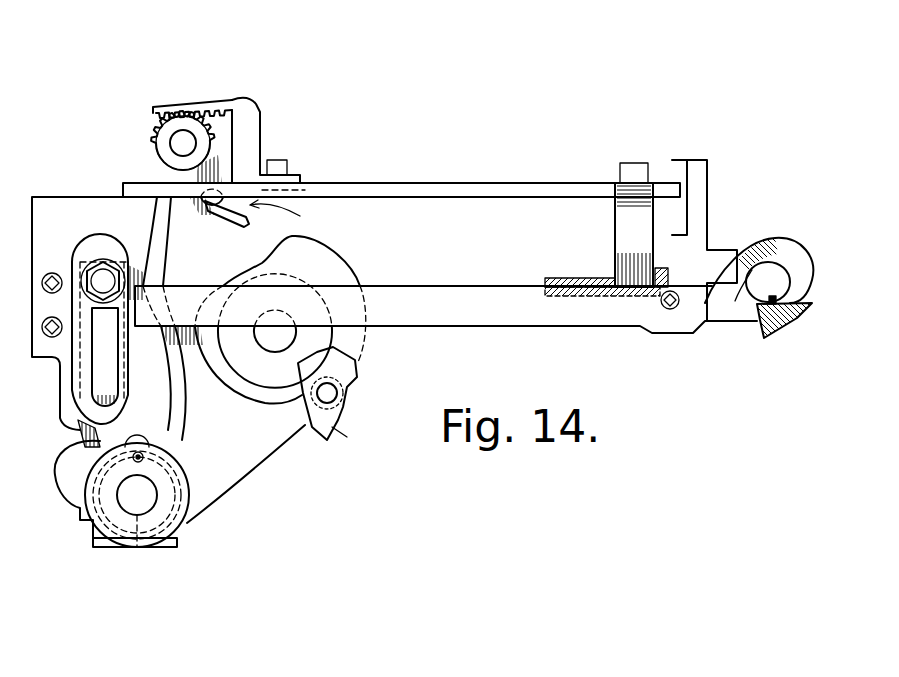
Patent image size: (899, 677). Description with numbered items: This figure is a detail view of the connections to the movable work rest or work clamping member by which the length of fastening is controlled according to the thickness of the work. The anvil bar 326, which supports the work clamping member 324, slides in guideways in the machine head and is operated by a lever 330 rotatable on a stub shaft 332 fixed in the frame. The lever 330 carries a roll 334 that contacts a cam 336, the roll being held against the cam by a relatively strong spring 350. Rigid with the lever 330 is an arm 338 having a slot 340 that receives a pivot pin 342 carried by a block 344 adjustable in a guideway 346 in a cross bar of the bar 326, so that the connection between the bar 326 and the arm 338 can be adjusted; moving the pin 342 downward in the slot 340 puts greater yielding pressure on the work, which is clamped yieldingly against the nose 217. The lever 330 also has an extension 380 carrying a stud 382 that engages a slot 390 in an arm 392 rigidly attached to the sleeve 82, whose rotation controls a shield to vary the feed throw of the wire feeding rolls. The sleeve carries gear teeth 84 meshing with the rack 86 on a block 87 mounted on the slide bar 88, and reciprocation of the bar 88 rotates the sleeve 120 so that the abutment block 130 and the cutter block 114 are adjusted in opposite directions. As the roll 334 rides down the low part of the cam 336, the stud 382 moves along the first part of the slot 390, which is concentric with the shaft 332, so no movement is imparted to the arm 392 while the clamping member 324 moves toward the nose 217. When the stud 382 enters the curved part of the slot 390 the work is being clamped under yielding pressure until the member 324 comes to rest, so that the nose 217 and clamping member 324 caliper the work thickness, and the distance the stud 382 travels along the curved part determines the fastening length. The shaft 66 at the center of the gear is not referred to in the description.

The shaft 66 is at (183, 143).
The sleeve member 82 is at (160, 146).
The gear teeth 84 is at (188, 112).
The rack 86 is at (200, 110).
The block 87 is at (258, 110).
The slide bar 88 is at (455, 185).
The cutter block 114 is at (563, 297).
The sleeve 120 is at (623, 238).
The abutment block 130 is at (667, 268).
The nose 217 is at (772, 297).
The work clamping and anvil member 324 is at (787, 320).
The anvil bar 326 is at (455, 323).
The operating lever 330 is at (230, 484).
The stub shaft 332 is at (147, 498).
The roll 334 is at (350, 390).
The cam 336 is at (350, 273).
The arm 338 is at (142, 405).
The slot 340 is at (92, 330).
The pivot pin 342 is at (103, 281).
The block 344 is at (108, 306).
The guideway 346 is at (118, 365).
The spring 350 is at (112, 532).
The extension 380 is at (200, 256).
The stud 382 is at (279, 221).
The slot 390 is at (302, 199).
The arm 392 is at (221, 167).